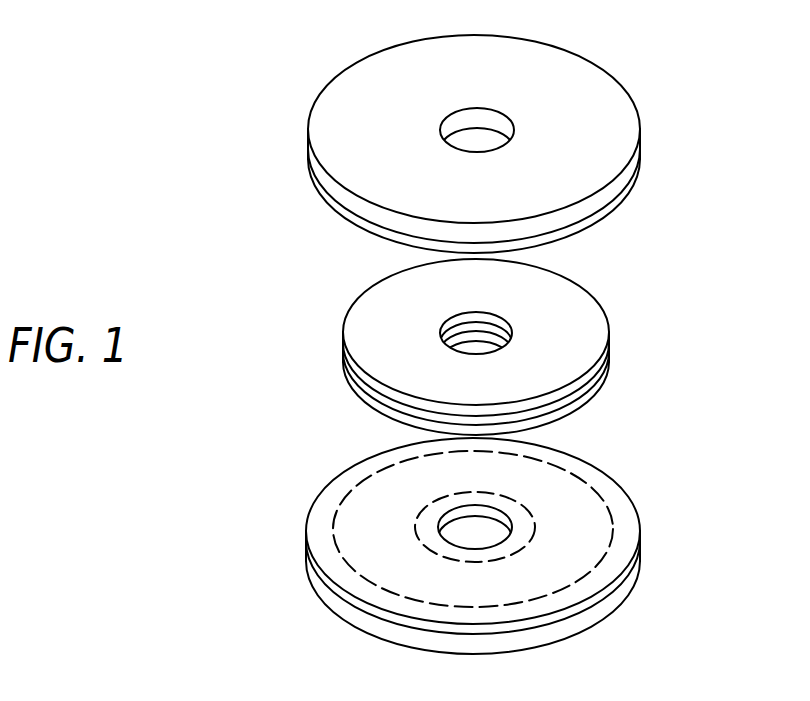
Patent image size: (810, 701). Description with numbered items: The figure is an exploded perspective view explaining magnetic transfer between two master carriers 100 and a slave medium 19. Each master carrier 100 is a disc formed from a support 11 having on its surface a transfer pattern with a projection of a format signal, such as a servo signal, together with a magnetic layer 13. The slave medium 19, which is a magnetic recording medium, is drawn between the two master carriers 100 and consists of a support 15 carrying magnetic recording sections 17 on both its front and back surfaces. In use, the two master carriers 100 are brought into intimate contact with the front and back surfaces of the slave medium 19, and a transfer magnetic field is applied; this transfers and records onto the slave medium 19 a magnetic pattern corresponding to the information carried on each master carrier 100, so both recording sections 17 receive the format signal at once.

The master carrier 100 is at (500, 344).
The support 11 is at (314, 170).
The magnetic layer 13 is at (338, 212).
The slave medium 19 is at (493, 347).
The support 15 is at (365, 394).
The magnetic recording section 17 is at (347, 372).